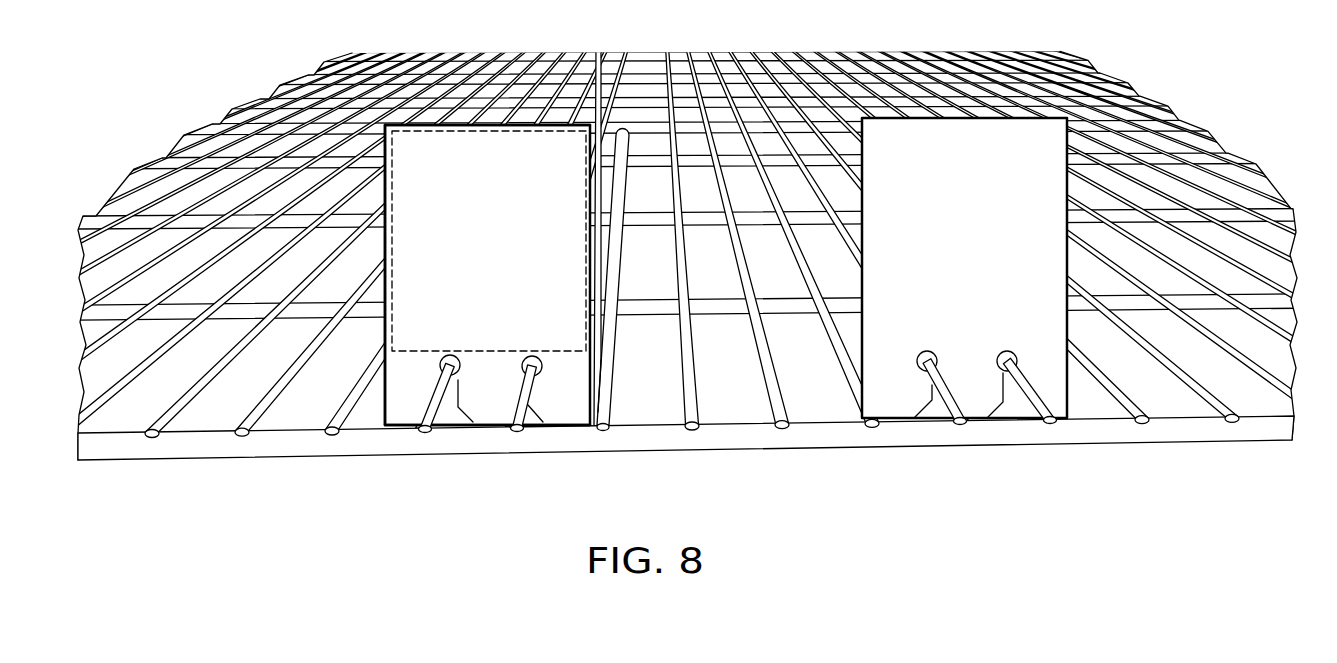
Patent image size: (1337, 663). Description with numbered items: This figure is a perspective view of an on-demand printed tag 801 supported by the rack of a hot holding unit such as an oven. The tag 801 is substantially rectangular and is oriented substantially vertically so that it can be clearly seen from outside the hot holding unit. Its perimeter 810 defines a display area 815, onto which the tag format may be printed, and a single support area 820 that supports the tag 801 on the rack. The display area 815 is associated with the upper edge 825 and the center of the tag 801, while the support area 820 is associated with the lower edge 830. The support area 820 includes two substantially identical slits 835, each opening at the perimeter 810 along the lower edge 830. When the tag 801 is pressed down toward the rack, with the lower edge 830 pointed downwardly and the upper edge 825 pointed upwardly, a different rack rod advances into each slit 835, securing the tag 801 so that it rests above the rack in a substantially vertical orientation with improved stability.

The printed tag 801 is at (504, 230).
The perimeter 810 is at (390, 371).
The display area 815 is at (618, 132).
The support area 820 is at (616, 355).
The upper edge 825 is at (455, 125).
The lower edge 830 is at (565, 428).
The slit 835 is at (462, 396).